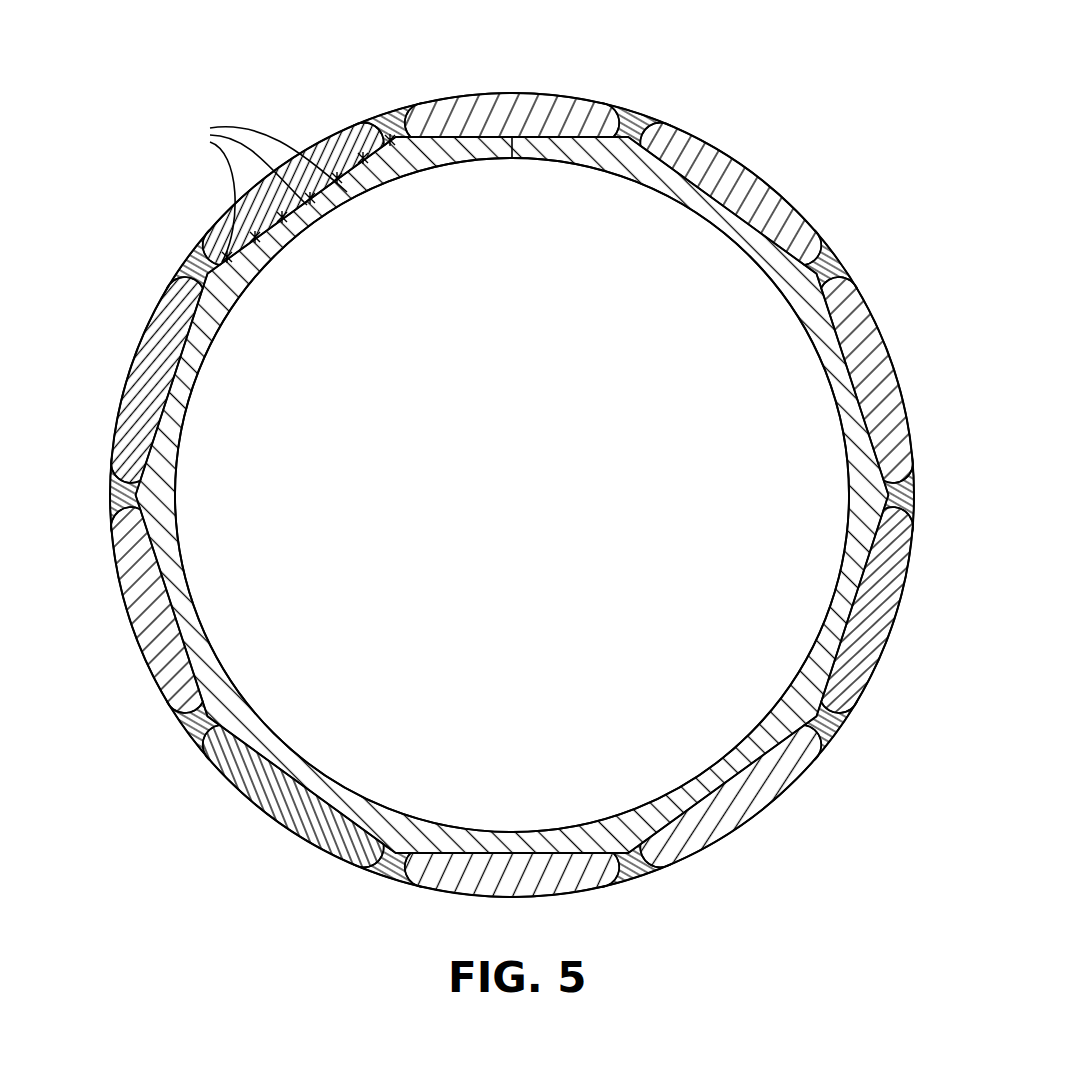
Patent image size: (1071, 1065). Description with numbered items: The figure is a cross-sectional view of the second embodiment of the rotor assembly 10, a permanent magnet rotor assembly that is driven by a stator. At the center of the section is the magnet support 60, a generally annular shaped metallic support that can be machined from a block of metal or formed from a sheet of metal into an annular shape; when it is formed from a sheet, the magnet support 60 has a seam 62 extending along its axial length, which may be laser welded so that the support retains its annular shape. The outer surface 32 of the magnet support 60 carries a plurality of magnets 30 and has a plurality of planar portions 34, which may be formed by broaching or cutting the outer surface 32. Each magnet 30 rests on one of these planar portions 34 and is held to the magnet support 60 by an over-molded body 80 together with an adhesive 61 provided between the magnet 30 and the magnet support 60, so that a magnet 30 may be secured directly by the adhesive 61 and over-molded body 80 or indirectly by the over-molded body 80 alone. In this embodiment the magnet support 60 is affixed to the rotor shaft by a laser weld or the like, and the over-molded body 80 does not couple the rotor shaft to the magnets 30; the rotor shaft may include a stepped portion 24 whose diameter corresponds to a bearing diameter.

The rotor assembly 10 is at (114, 116).
The stepped portion 24 is at (685, 752).
The magnet 30 is at (857, 288).
The outer surface 32 is at (150, 555).
The planar portion 34 is at (855, 390).
The magnet support 60 is at (833, 630).
The adhesive 61 is at (288, 194).
The seam 62 is at (496, 136).
The over-molded body 80 is at (396, 124).